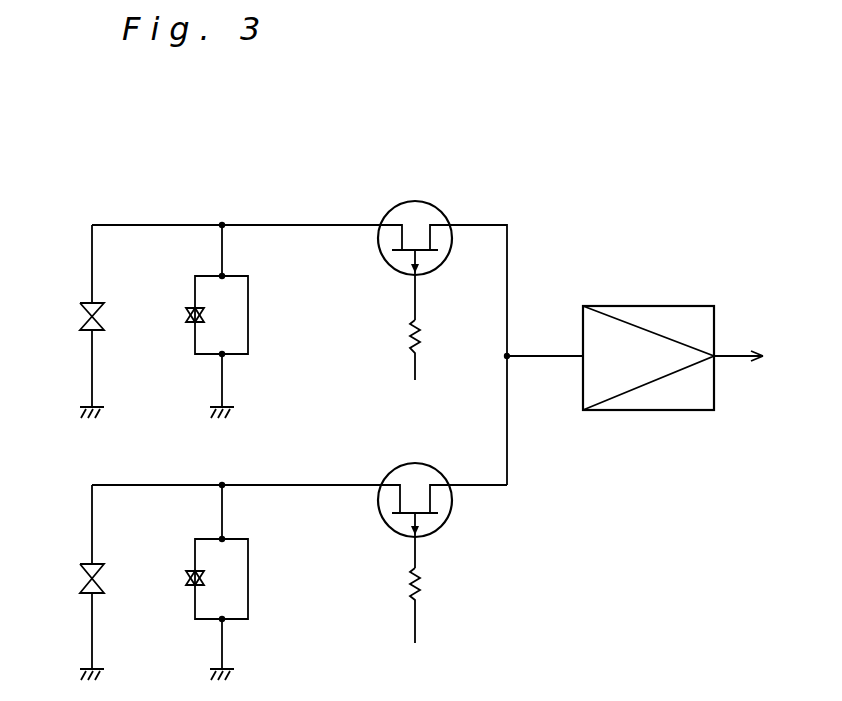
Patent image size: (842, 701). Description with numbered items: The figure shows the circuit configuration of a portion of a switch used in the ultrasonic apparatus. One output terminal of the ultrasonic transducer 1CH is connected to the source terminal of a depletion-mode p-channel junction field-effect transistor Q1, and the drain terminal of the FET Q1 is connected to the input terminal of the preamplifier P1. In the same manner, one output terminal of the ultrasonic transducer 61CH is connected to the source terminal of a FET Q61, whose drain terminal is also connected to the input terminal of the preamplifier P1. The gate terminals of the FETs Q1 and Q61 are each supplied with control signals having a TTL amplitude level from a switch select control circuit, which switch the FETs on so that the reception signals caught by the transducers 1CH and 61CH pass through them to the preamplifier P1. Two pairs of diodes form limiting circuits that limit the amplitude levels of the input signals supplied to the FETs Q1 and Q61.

The depletion-mode p-channel junction field-effect transistor Q1 is at (437, 204).
The FET Q61 is at (432, 467).
The preamplifier P1 is at (715, 306).
The ultrasonic transducer 1CH is at (68, 321).
The ultrasonic transducer 61CH is at (62, 582).